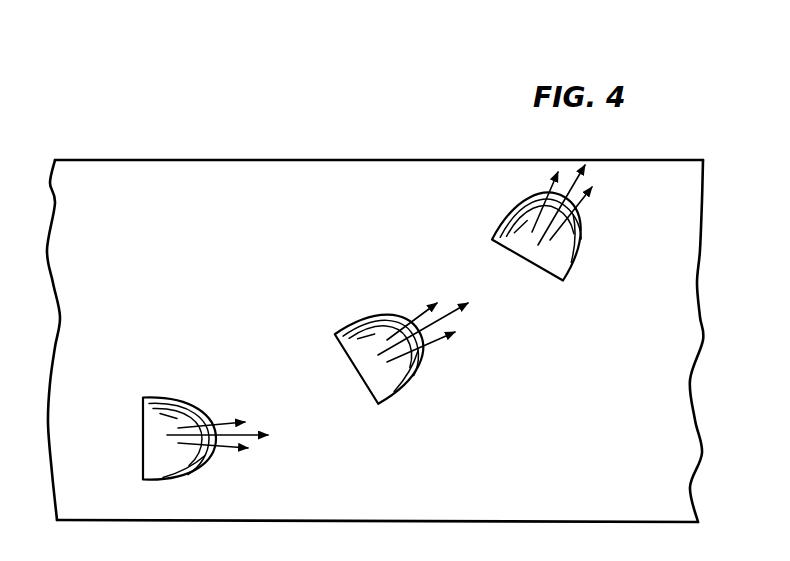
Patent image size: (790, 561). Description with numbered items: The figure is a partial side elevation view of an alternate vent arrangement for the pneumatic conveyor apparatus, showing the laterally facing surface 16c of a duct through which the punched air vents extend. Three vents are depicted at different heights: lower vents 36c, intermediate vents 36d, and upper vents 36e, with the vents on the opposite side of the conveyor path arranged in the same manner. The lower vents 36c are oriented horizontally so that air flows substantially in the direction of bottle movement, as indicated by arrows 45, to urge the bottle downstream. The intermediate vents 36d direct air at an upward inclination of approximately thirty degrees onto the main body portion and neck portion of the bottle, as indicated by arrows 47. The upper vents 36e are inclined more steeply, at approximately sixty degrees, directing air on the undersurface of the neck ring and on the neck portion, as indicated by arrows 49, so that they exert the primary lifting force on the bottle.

The laterally facing surface 16c is at (245, 263).
The lower vents 36c is at (155, 430).
The intermediate vents 36d is at (370, 373).
The upper vents 36e is at (540, 257).
The arrows 45 is at (224, 422).
The arrows 47 is at (415, 320).
The arrows 49 is at (585, 200).